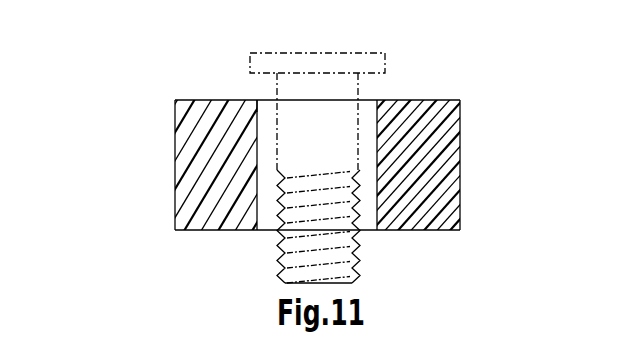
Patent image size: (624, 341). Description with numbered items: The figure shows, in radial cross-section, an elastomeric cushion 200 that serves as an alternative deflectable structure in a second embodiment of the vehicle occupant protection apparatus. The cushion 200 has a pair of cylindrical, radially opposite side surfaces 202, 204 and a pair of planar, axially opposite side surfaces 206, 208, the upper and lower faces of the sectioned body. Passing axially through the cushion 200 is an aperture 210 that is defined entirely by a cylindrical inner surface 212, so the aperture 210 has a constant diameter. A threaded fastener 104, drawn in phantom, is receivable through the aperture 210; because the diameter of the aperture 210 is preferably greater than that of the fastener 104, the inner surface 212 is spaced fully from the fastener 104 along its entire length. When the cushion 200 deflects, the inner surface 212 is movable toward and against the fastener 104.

The elastomeric cushion 200 is at (155, 108).
The cylindrical side surface 202 is at (175, 175).
The cylindrical side surface 204 is at (461, 147).
The planar side surface 206 is at (443, 100).
The planar side surface 208 is at (430, 230).
The aperture 210 is at (315, 118).
The cylindrical inner surface 212 is at (262, 110).
The threaded fastener 104 is at (362, 52).